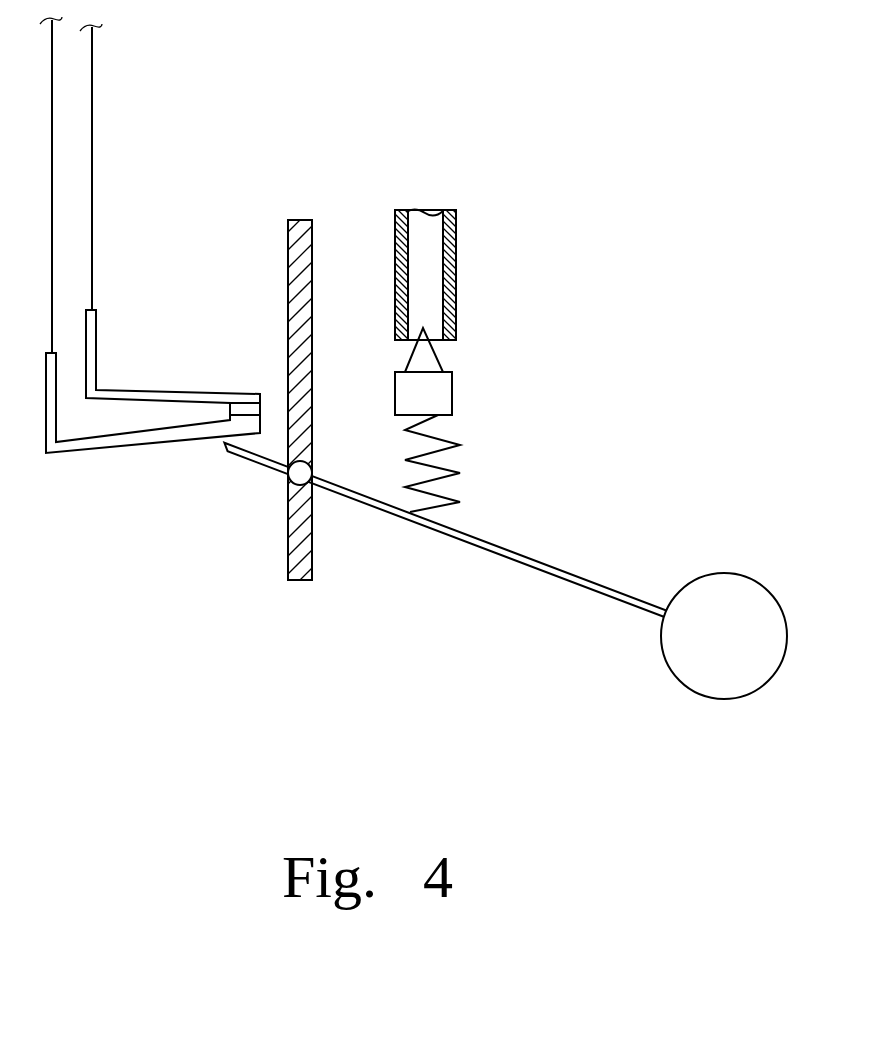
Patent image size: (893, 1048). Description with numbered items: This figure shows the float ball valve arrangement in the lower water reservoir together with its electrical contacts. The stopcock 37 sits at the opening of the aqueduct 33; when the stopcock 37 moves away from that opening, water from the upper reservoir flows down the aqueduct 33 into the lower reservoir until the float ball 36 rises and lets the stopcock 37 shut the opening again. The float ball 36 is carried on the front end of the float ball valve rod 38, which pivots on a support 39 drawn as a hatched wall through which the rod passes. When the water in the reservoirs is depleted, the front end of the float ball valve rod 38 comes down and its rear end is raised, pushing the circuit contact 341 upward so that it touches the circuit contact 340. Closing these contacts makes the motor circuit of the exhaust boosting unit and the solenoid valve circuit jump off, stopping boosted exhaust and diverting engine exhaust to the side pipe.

The aqueduct 33 is at (457, 227).
The float ball 36 is at (708, 595).
The stopcock 37 is at (435, 398).
The float ball valve rod 38 is at (247, 457).
The support wall 39 is at (287, 477).
The circuit contact 340 is at (243, 392).
The circuit contact 341 is at (183, 440).